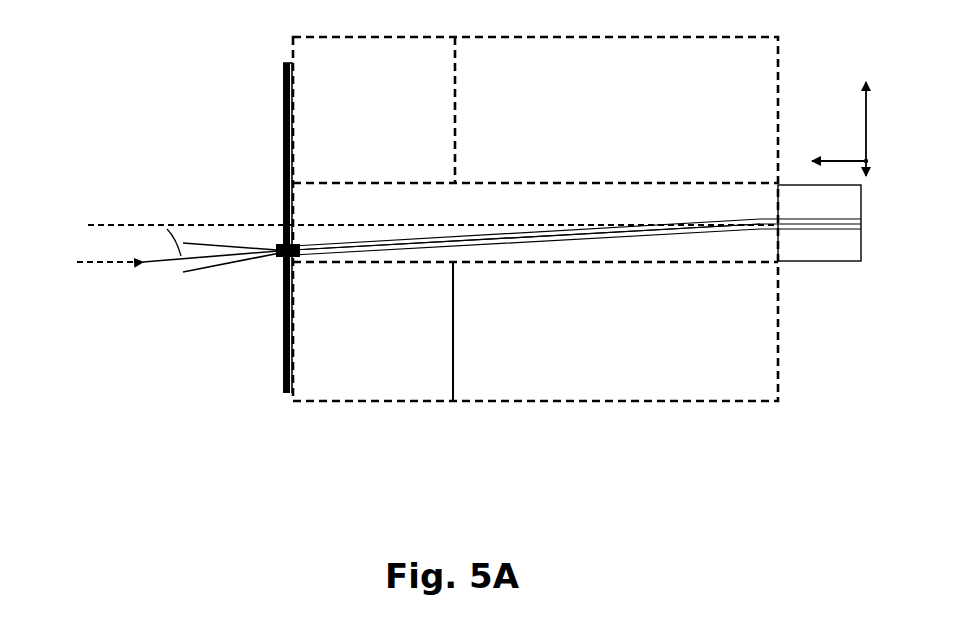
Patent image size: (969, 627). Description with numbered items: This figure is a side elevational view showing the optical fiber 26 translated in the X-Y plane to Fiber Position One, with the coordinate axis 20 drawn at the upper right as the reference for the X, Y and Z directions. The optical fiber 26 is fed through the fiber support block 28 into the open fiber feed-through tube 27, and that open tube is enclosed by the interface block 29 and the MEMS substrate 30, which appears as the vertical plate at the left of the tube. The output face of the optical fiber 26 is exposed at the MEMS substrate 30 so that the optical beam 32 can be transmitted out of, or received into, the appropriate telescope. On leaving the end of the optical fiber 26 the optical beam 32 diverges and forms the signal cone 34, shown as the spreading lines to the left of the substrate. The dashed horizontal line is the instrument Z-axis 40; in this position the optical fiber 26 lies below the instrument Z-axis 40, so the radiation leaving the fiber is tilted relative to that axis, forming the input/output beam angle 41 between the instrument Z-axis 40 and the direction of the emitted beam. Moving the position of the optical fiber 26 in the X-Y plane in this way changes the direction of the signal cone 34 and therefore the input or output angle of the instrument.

The coordinate axis 20 is at (854, 146).
The optical fiber 26 is at (580, 226).
The open fiber feed-through tube 27 is at (526, 239).
The fiber support block 28 is at (415, 331).
The interface block 29 is at (616, 331).
The MEMS substrate 30 is at (279, 322).
The optical beam 32 is at (163, 272).
The signal cone 34 is at (203, 271).
The instrument Z-axis 40 is at (102, 229).
The input/output beam angle 41 is at (164, 236).